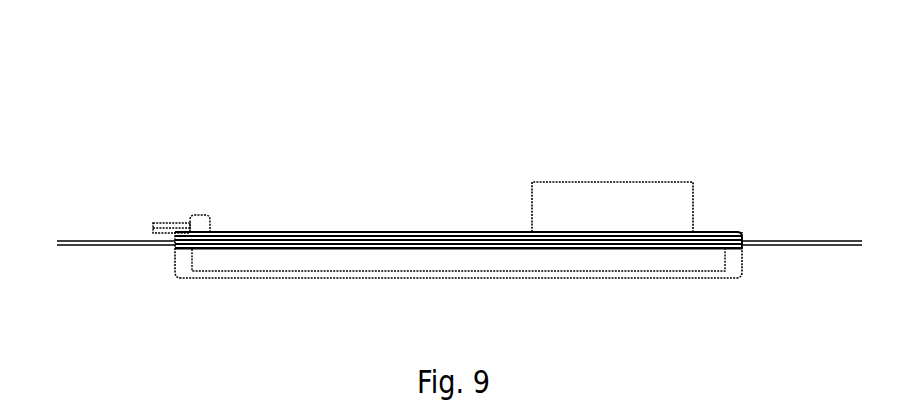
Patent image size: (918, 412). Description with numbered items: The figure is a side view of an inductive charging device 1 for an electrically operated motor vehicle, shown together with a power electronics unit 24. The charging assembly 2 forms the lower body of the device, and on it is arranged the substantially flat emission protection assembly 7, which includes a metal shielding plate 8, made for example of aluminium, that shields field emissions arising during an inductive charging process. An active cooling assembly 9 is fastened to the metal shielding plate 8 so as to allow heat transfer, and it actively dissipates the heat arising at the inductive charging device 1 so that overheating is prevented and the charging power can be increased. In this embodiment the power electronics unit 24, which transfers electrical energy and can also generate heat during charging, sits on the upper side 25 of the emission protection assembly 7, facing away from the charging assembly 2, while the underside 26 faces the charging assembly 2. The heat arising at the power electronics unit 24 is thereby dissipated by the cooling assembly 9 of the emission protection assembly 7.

The inductive charging device 1 is at (147, 137).
The charging assembly 2 is at (263, 262).
The emission protection assembly 7 is at (289, 227).
The metal shielding plate 8 is at (102, 240).
The active cooling assembly 9 is at (372, 247).
The power electronics unit 24 is at (606, 203).
The upper side 25 is at (808, 240).
The underside 26 is at (802, 247).